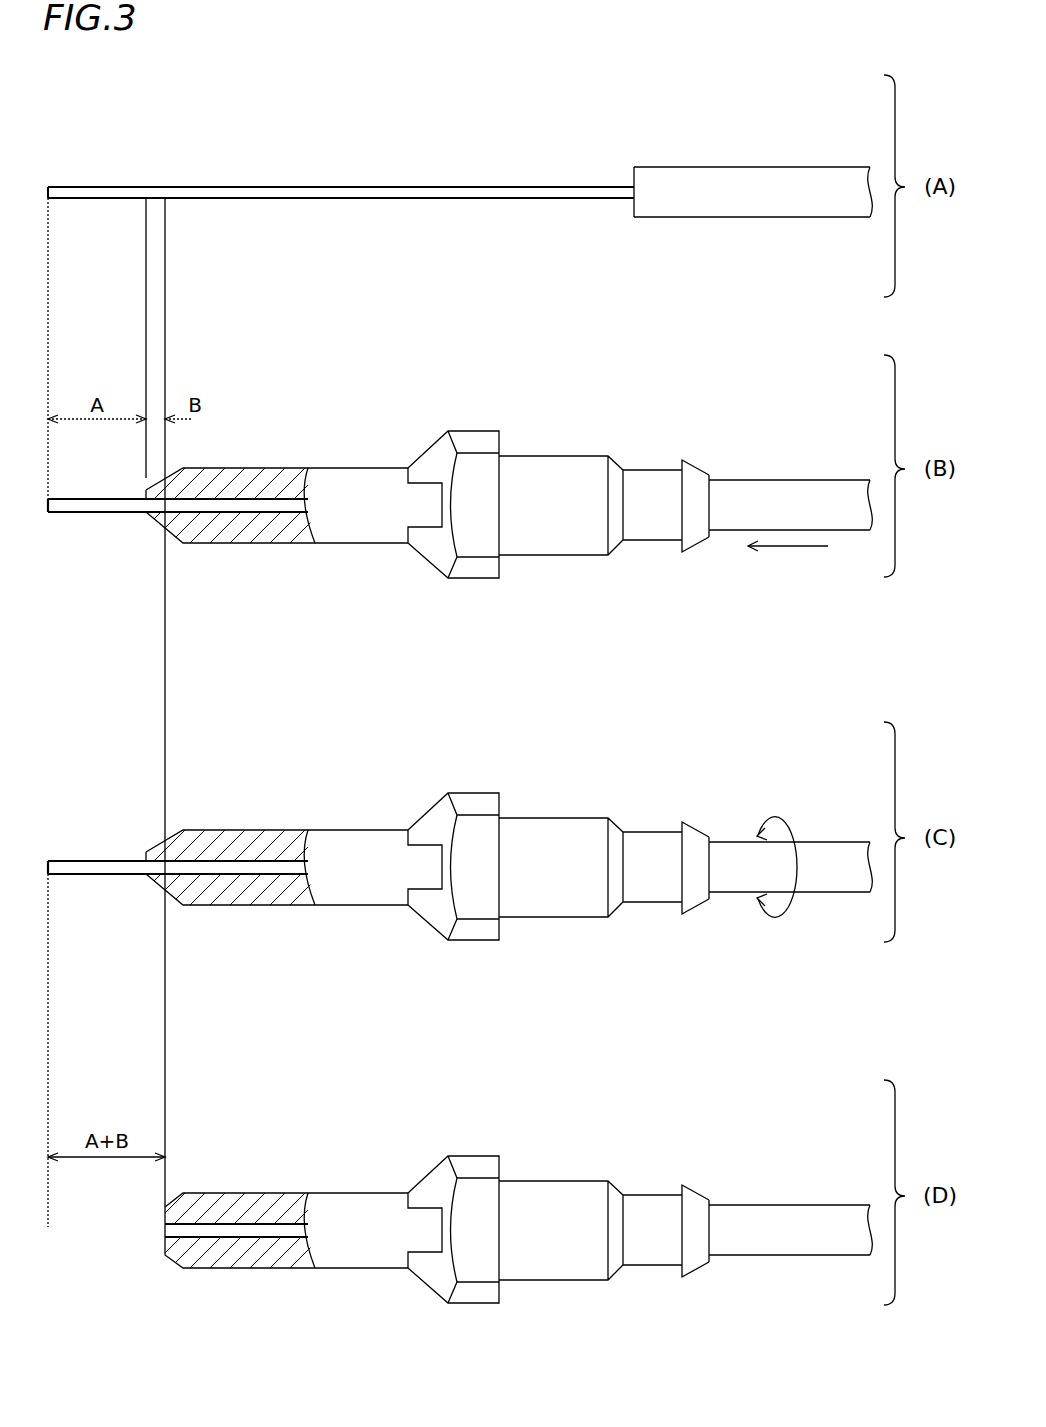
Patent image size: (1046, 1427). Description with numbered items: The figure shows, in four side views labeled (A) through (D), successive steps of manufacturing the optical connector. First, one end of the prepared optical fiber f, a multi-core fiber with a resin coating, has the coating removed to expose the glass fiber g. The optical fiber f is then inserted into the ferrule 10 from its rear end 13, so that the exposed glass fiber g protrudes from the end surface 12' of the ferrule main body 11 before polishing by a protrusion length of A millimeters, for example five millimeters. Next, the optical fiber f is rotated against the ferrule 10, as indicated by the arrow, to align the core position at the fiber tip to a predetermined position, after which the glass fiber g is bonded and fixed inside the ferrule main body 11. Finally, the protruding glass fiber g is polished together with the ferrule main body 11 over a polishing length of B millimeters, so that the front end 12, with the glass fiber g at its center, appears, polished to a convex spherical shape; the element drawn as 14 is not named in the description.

The ferrule 10 is at (350, 426).
The ferrule main body 11 is at (360, 544).
The front end 12 is at (227, 1230).
The end surface before polishing 12' is at (222, 686).
The rear end 13 is at (583, 470).
The coupling nut 14 is at (473, 465).
The glass fiber g is at (329, 187).
The optical fiber f is at (712, 166).